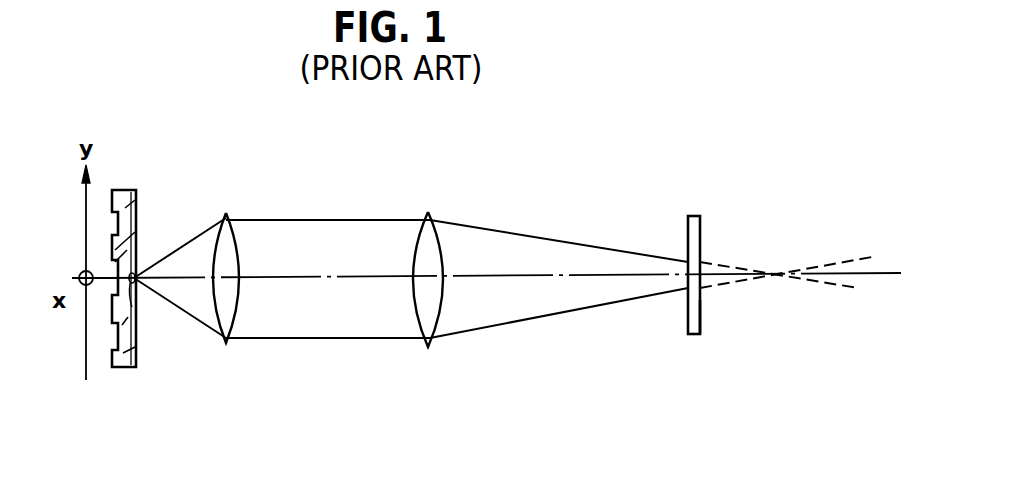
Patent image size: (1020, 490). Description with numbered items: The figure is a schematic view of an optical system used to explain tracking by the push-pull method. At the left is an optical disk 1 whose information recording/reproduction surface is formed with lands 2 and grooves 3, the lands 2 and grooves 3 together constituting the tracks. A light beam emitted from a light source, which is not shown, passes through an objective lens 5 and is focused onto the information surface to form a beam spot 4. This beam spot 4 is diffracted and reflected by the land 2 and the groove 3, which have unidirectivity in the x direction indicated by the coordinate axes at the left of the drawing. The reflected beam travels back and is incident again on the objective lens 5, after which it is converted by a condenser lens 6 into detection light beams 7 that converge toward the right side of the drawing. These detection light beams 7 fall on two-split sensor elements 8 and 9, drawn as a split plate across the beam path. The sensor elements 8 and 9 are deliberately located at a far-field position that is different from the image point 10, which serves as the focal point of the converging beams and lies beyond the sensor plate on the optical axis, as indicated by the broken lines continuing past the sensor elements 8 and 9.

The optical disk 1 is at (137, 353).
The land 2 is at (140, 250).
The groove 3 is at (137, 220).
The beam spot 4 is at (130, 292).
The objective lens 5 is at (236, 242).
The condenser lens 6 is at (440, 248).
The detection light beams 7 is at (633, 303).
The two-split sensor element 8 is at (700, 222).
The two-split sensor element 9 is at (702, 313).
The image point 10 is at (778, 276).